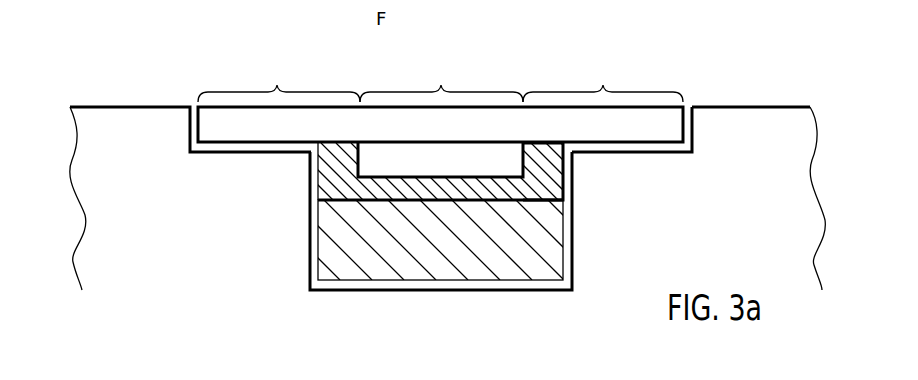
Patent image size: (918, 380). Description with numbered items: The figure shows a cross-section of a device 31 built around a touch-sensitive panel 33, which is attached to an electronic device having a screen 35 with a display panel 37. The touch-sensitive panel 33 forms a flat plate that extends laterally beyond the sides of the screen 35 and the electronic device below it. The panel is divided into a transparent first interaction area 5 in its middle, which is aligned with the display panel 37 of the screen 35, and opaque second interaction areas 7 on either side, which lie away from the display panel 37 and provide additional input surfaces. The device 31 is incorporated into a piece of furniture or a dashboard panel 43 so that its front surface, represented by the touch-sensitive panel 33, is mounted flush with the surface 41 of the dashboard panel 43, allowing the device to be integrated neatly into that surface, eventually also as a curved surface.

The transparent first interaction area 5 is at (441, 82).
The opaque second interaction area 7 is at (440, 82).
The device 31 is at (323, 84).
The touch-sensitive panel 33 is at (688, 120).
The screen 35 is at (564, 165).
The display panel 37 is at (370, 161).
The surface 41 is at (129, 107).
The dashboard panel 43 is at (98, 88).